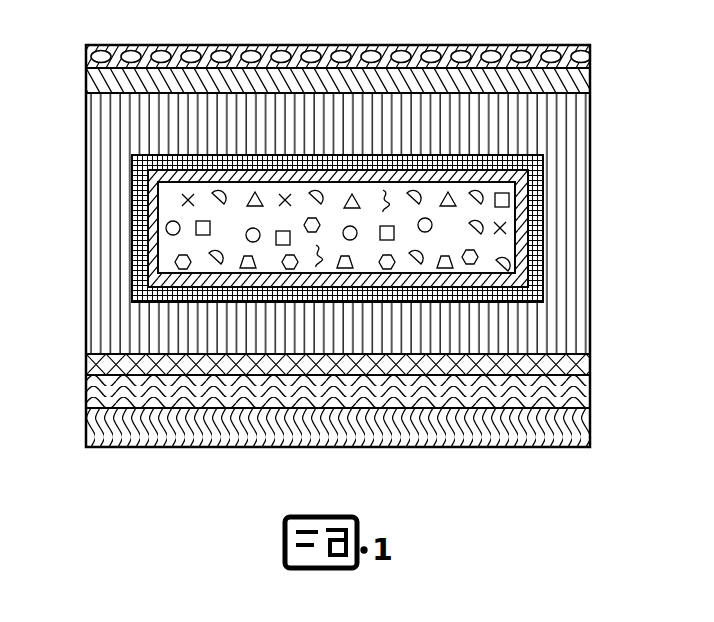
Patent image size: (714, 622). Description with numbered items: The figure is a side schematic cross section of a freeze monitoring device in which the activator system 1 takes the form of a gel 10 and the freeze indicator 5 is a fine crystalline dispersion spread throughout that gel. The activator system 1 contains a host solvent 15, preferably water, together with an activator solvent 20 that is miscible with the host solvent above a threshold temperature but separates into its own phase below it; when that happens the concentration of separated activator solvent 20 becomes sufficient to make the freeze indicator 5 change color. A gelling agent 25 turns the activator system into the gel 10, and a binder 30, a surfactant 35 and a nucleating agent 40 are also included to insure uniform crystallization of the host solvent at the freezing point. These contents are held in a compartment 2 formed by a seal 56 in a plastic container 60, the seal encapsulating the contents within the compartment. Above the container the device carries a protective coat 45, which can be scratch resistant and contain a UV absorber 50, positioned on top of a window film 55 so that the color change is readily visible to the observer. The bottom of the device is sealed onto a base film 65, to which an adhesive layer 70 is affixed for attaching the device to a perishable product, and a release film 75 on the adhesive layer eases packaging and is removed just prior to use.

The activator system 1 is at (370, 200).
The compartment 2 is at (383, 225).
The freeze indicator 5 is at (518, 203).
The gel 10 is at (509, 264).
The host solvent 15 is at (228, 237).
The activator solvent 20 is at (508, 230).
The gelling agent 25 is at (174, 260).
The binder 30 is at (447, 267).
The surfactant 35 is at (166, 229).
The nucleating agent 40 is at (447, 192).
The protective coat 45 is at (87, 56).
The UV absorber 50 is at (113, 47).
The window film 55 is at (87, 82).
The seal 56 is at (545, 166).
The plastic container 60 is at (87, 197).
The base film 65 is at (87, 363).
The adhesive layer 70 is at (87, 392).
The release film 75 is at (87, 427).